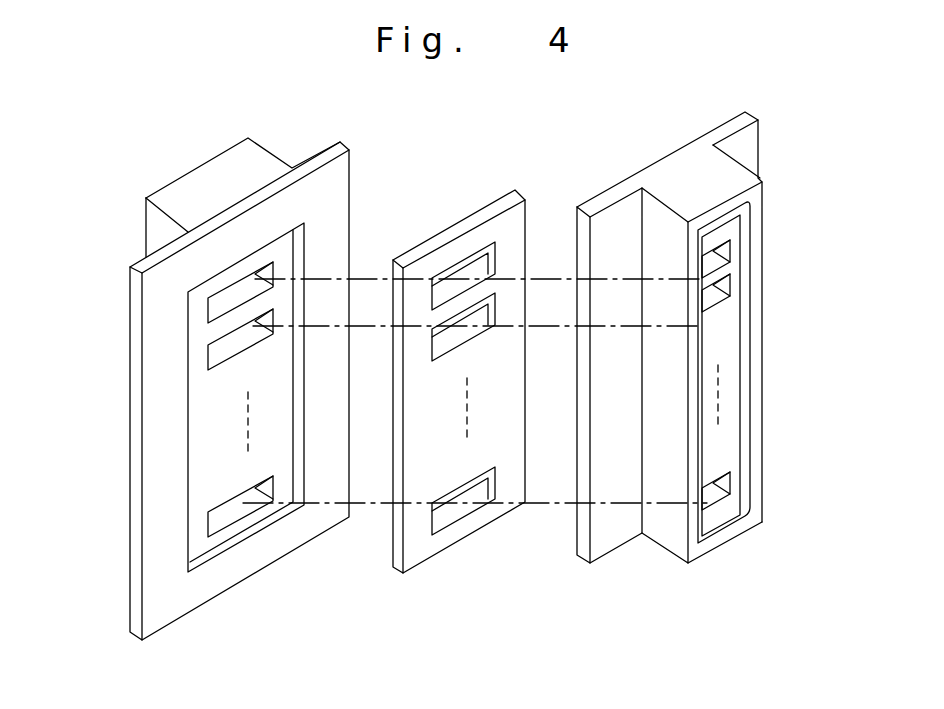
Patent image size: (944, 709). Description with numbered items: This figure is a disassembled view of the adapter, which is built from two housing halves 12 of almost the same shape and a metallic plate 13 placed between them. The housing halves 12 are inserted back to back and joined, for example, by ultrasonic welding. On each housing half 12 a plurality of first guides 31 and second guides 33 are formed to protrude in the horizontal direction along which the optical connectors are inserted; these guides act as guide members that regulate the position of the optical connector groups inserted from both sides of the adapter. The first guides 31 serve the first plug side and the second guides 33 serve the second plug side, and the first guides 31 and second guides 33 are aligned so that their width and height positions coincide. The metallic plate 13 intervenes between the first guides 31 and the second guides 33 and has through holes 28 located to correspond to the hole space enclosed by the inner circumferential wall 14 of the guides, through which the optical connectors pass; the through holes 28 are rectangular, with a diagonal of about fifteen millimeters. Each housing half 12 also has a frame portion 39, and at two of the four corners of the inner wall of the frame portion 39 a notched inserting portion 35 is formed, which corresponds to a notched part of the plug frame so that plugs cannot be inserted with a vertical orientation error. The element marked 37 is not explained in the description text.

The housing half 12 is at (268, 157).
The metallic plate 13 is at (520, 228).
The inner circumferential wall 14 is at (210, 322).
The through hole 28 is at (475, 253).
The first guide 31 is at (730, 282).
The second guide 33 is at (212, 308).
The notched inserting portion 35 is at (744, 203).
The recess 37 is at (297, 253).
The frame portion 39 is at (189, 187).